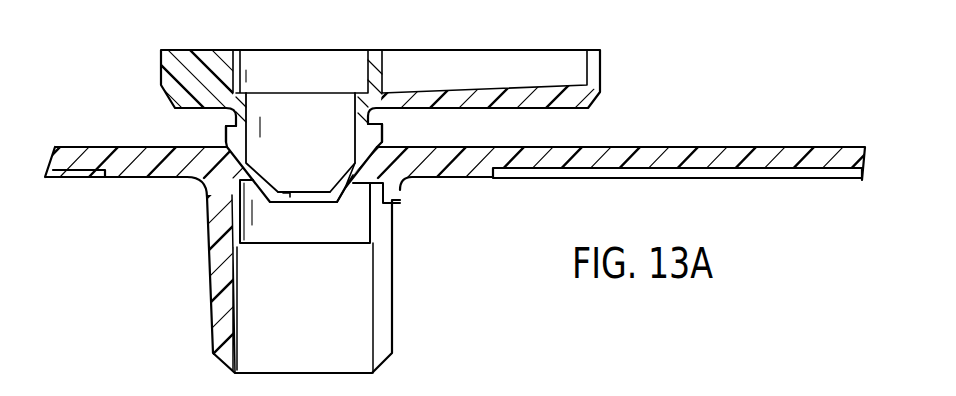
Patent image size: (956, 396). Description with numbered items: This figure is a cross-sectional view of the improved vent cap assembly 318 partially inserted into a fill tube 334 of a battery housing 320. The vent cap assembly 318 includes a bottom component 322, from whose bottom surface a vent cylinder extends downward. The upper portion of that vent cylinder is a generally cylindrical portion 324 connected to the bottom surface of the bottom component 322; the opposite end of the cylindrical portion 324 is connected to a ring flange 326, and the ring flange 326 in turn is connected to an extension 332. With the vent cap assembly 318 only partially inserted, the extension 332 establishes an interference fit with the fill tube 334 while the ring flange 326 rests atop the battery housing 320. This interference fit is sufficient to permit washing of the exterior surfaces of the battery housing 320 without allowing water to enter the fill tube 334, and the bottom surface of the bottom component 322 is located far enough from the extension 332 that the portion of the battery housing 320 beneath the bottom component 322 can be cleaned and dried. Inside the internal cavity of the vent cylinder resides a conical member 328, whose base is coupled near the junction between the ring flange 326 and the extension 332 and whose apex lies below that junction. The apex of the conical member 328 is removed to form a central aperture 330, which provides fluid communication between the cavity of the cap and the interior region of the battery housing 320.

The vent cap assembly 318 is at (156, 34).
The battery housing 320 is at (718, 158).
The bottom component 322 is at (598, 80).
The cylindrical portion 324 is at (377, 123).
The ring flange 326 is at (237, 136).
The conical member 328 is at (342, 188).
The central aperture 330 is at (310, 203).
The extension 332 is at (232, 199).
The fill tube 334 is at (218, 277).